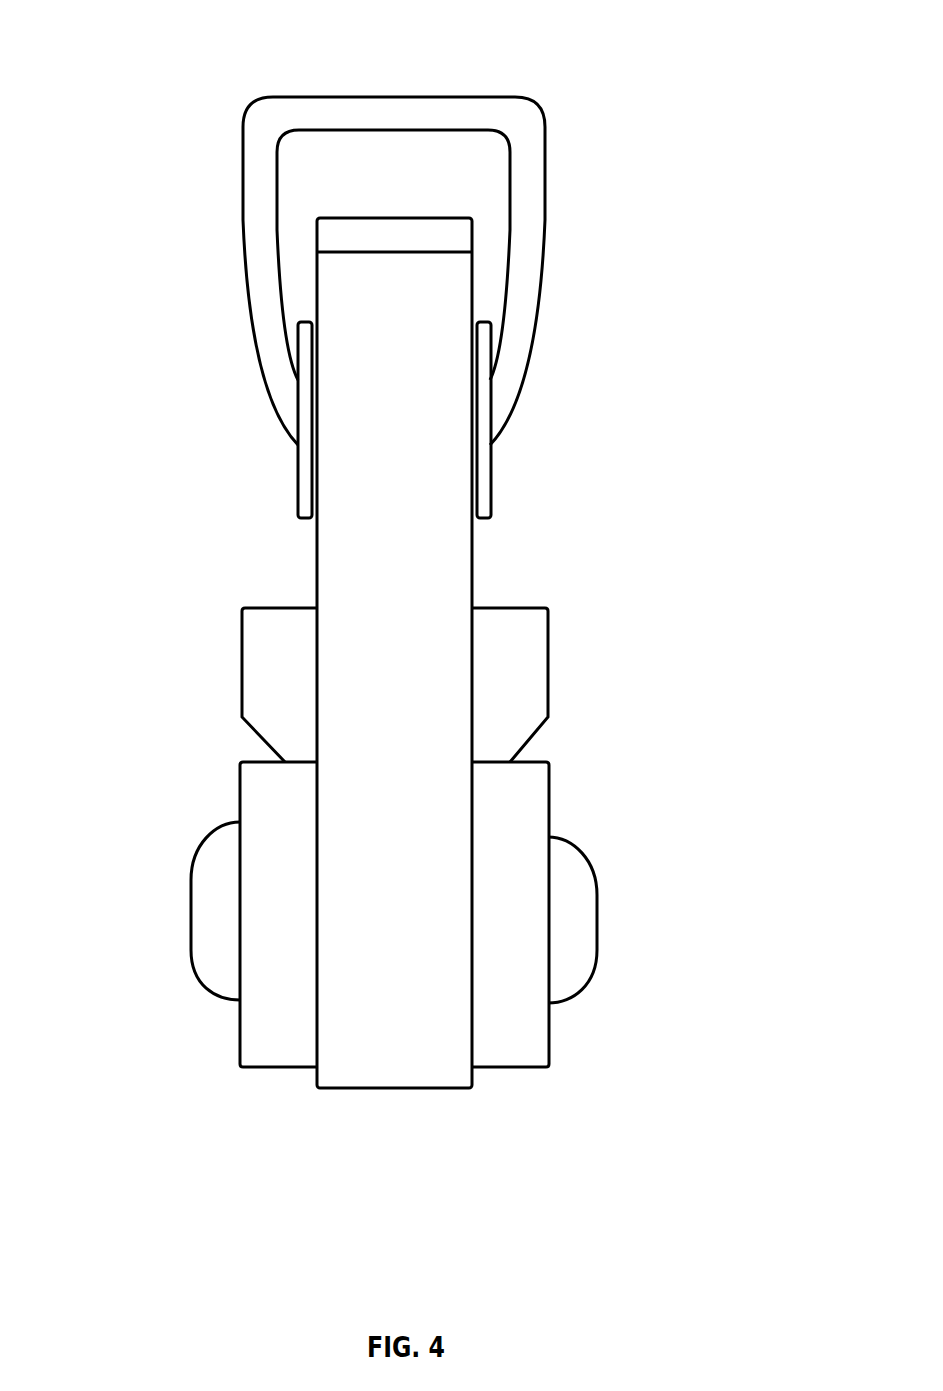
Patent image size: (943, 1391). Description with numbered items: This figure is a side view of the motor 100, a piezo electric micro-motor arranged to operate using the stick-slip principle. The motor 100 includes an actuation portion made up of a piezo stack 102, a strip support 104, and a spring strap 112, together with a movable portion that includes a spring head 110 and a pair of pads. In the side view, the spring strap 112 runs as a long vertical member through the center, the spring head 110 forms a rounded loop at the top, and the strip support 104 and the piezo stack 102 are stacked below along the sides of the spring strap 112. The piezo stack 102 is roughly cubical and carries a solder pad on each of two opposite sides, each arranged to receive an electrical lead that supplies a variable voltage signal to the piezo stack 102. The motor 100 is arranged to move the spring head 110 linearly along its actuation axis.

The motor 100 is at (700, 60).
The piezo stack 102 is at (497, 1003).
The strip support 104 is at (515, 670).
The spring head 110 is at (255, 168).
The spring strap 112 is at (357, 678).